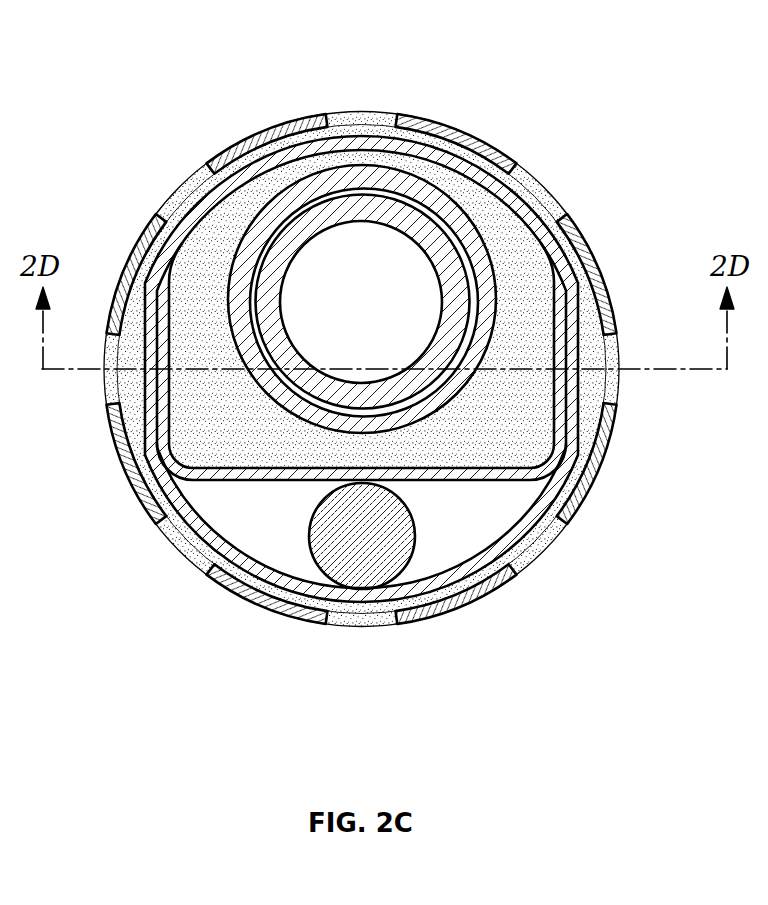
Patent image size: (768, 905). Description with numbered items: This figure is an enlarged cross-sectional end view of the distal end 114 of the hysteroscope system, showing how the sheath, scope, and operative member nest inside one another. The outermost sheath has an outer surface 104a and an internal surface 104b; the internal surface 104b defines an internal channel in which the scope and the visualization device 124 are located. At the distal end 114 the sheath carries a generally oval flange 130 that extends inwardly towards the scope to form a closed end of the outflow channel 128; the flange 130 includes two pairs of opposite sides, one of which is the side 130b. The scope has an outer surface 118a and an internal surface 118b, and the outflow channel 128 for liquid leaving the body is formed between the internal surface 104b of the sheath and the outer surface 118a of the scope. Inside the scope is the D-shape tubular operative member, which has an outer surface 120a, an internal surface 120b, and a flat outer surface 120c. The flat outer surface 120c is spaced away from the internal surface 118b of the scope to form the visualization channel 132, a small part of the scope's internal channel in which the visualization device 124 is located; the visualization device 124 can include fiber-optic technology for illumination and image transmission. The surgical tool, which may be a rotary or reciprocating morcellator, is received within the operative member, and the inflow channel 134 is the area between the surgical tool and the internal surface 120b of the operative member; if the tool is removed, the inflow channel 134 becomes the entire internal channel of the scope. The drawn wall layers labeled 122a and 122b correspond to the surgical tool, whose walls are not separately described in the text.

The distal end 114 is at (160, 72).
The outer surface 104a is at (230, 138).
The internal surface 104b is at (270, 140).
The flange 130 is at (289, 369).
The side 130b is at (305, 369).
The outflow channel 128 is at (121, 326).
The inflow channel 134 is at (513, 323).
The outer surface 120a is at (570, 423).
The internal surface 120b is at (558, 411).
The flat outer surface 120c is at (508, 484).
The outer surface 118a is at (172, 513).
The internal surface 118b is at (222, 500).
The outer tube 122a is at (308, 192).
The inner tube 122b is at (335, 210).
The visualization device 124 is at (360, 574).
The visualization channel 132 is at (283, 537).